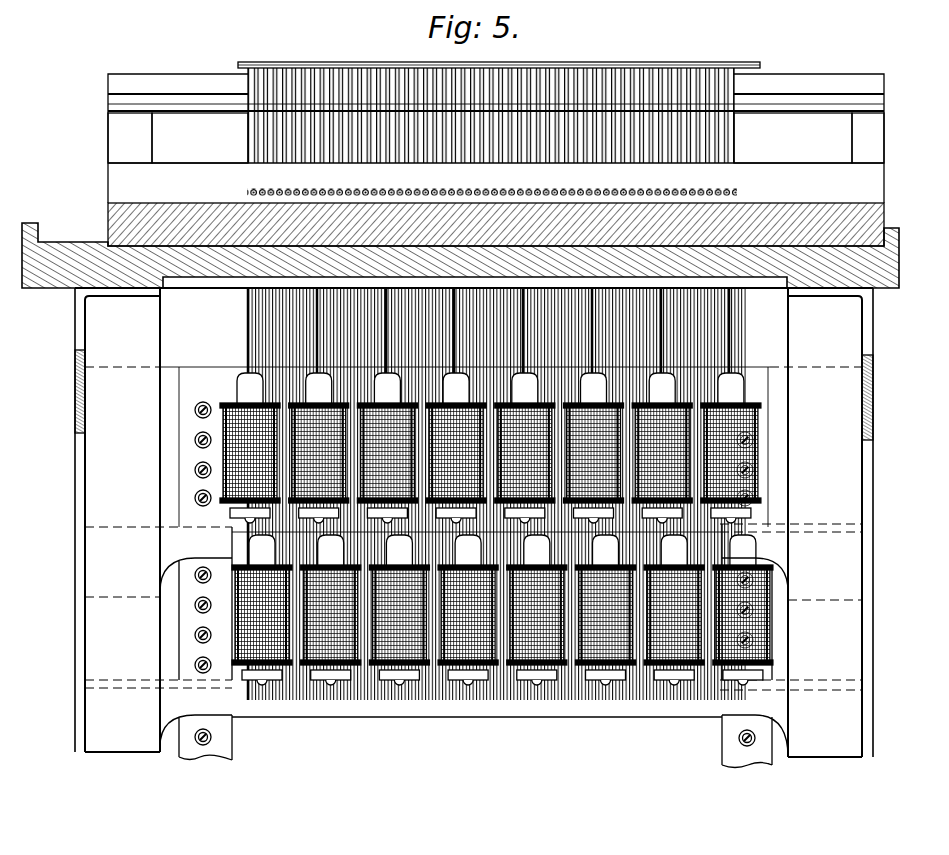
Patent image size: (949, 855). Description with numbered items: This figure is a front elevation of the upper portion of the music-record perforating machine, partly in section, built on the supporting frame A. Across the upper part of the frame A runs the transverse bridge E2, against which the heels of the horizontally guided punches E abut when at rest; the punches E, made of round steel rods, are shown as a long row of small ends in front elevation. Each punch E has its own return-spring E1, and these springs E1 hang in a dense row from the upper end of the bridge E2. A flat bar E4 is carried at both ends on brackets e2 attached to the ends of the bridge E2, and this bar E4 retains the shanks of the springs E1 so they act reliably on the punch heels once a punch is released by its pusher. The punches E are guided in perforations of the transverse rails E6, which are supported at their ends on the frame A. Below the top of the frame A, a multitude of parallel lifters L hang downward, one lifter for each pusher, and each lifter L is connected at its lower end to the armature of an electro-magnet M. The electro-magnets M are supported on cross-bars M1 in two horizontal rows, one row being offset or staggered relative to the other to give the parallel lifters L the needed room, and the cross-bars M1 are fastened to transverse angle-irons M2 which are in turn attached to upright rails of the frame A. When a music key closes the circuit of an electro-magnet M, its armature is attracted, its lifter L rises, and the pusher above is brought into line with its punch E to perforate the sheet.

The supporting frame A is at (893, 262).
The punches E is at (338, 188).
The return-springs E1 is at (262, 82).
The transverse bridge E2 is at (322, 52).
The flat bar E4 is at (890, 126).
The transverse guide-rails E6 is at (496, 160).
The brackets e2 is at (150, 135).
The lifters L is at (266, 331).
The electro-magnets M is at (250, 452).
The cross-bars M1 is at (245, 514).
The transverse angle-irons M2 is at (797, 715).